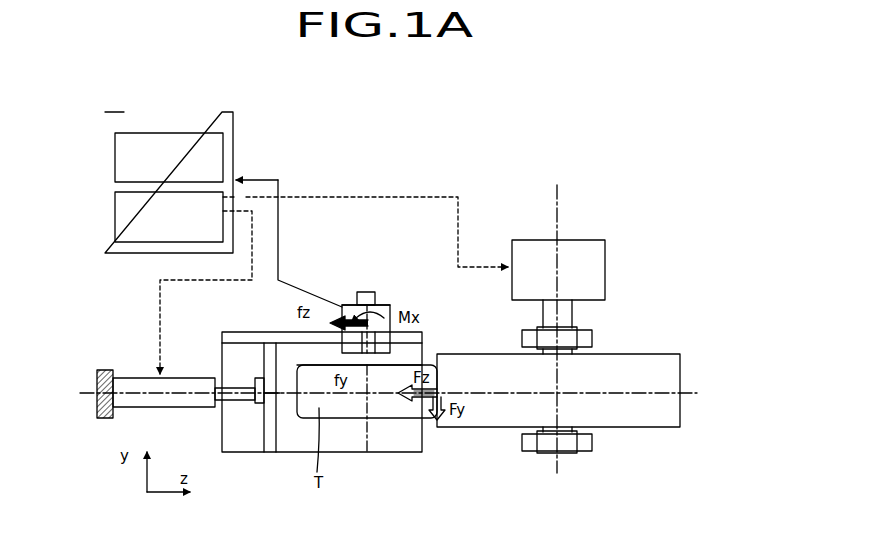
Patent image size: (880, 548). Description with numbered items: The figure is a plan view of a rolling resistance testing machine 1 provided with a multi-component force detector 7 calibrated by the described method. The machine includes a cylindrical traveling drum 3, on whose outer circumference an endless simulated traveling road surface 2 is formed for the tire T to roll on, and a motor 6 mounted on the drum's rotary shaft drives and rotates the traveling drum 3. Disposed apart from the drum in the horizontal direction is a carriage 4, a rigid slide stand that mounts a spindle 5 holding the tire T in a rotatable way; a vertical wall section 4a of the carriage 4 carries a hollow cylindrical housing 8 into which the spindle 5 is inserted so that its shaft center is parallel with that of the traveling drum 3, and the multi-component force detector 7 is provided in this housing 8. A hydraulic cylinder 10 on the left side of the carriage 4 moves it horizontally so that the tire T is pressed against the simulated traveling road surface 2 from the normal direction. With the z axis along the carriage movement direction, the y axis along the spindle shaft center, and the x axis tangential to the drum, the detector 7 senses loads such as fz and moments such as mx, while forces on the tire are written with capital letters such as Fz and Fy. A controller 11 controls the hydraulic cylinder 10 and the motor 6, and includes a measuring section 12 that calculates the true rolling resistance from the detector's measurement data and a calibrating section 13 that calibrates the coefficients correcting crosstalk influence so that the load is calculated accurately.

The rolling resistance testing machine 1 is at (492, 126).
The simulated traveling road surface 2 is at (680, 362).
The traveling drum 3 is at (630, 362).
The carriage 4 is at (418, 460).
The vertical wall section 4a is at (422, 352).
The spindle 5 is at (366, 292).
The motor 6 is at (605, 252).
The multi-component force detector 7 is at (385, 298).
The housing 8 is at (342, 306).
The hydraulic cylinder 10 is at (134, 385).
The controller 11 is at (228, 112).
The measuring section 12 is at (115, 216).
The calibrating section 13 is at (115, 157).